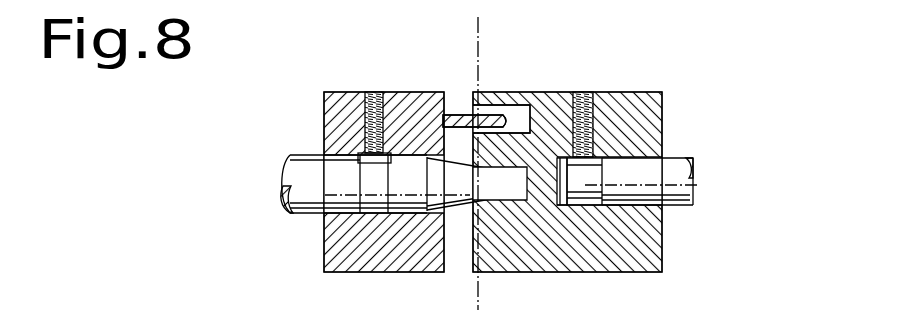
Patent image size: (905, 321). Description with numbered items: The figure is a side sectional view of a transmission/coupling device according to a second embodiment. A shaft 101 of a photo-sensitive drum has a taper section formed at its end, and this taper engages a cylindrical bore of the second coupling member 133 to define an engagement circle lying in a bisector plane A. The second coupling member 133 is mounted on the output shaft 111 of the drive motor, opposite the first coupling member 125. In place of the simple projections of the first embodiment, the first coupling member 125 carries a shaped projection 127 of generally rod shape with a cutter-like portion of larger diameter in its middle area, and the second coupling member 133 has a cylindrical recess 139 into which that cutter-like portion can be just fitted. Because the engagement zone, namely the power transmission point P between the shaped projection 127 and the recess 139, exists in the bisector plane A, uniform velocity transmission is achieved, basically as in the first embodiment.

The shaft 101 is at (304, 168).
The output shaft 111 is at (667, 172).
The first coupling member 125 is at (362, 253).
The shaped projection 127 is at (491, 100).
The second coupling member 133 is at (632, 242).
The cylindrical recess 139 is at (535, 95).
The bisector plane A is at (478, 50).
The power transmission point P is at (474, 120).